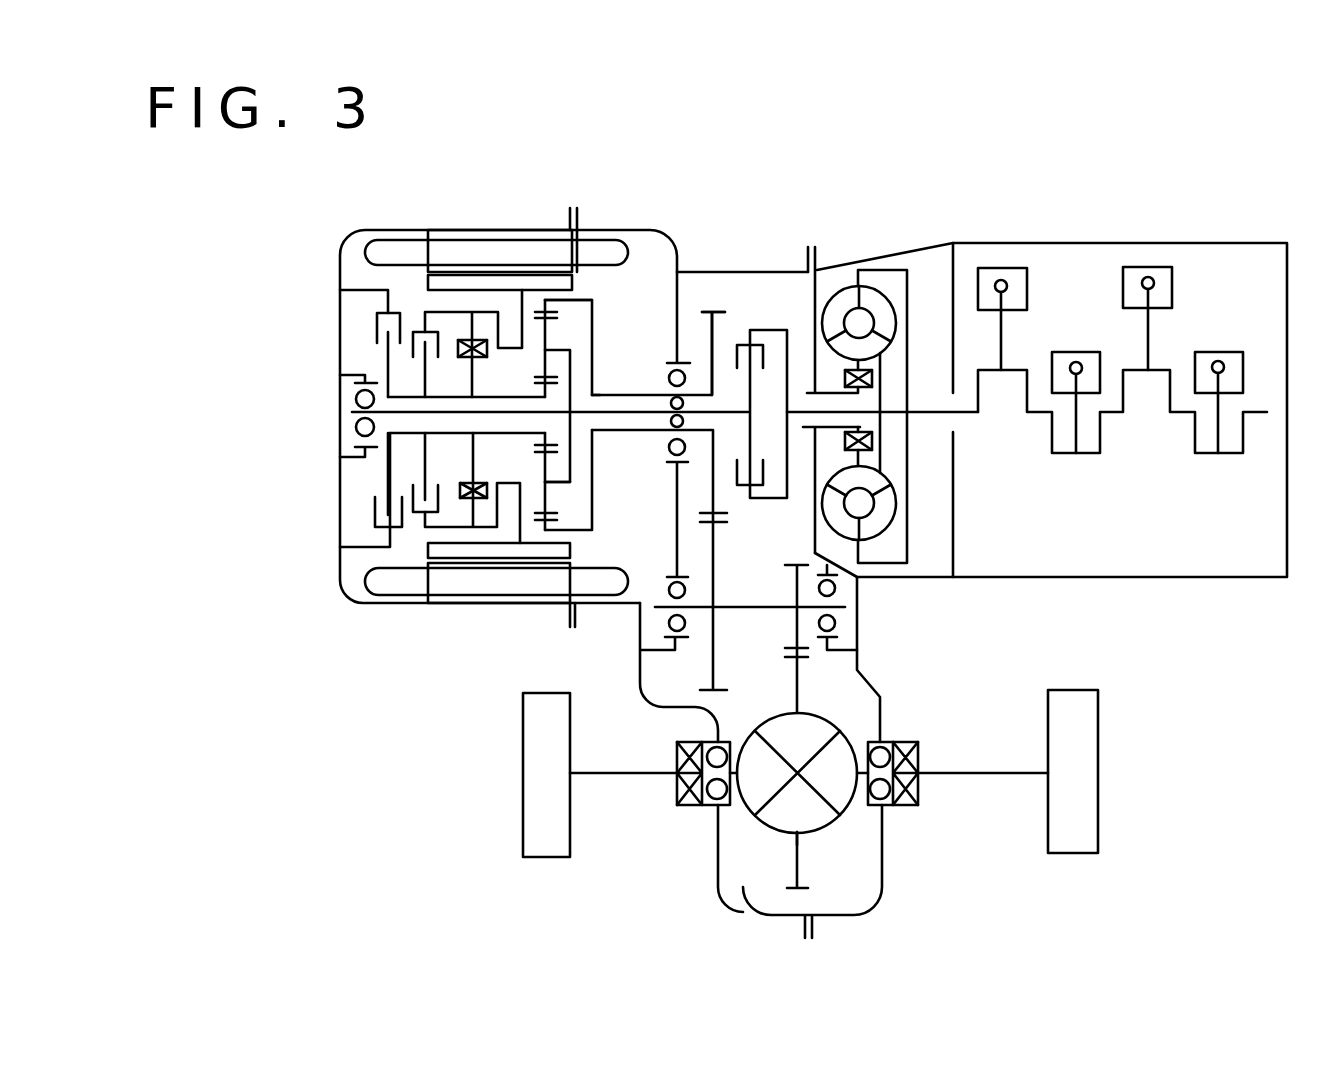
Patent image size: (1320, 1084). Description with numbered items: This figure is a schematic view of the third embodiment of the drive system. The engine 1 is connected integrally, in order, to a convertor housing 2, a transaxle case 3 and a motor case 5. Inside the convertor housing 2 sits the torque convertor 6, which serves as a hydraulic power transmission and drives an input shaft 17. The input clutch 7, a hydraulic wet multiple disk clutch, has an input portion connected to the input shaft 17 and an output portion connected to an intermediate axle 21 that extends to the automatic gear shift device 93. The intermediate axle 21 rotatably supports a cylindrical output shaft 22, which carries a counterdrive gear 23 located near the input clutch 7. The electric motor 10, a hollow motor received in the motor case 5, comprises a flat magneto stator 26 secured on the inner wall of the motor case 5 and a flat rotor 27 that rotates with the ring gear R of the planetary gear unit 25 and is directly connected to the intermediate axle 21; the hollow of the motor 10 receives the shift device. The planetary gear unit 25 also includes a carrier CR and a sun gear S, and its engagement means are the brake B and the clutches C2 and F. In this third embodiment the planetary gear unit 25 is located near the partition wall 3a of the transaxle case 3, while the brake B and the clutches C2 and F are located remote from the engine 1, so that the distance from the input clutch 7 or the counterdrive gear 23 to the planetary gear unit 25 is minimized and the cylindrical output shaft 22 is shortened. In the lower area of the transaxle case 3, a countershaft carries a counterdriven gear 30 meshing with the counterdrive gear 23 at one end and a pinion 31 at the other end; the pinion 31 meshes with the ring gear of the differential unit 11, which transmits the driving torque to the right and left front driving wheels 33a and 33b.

The engine 1 is at (1168, 236).
The convertor housing 2 is at (920, 247).
The transaxle case 3 is at (736, 272).
The partition wall 3a is at (659, 403).
The motor case 5 is at (363, 232).
The torque convertor 6 is at (841, 268).
The input clutch 7 is at (742, 345).
The automatic gear shift device 93 is at (592, 285).
The electric motor 10 is at (490, 222).
The differential unit 11 is at (855, 700).
The input shaft 17 is at (875, 424).
The intermediate axle 21 is at (613, 414).
The cylindrical output shaft 22 is at (650, 432).
The counterdrive gear 23 is at (708, 310).
The planetary gear unit 25 is at (578, 335).
The magneto stator 26 is at (447, 250).
The rotor 27 is at (548, 275).
The counterdriven gear 30 is at (714, 552).
The pinion 31 is at (797, 630).
The front driving wheel 33a is at (540, 822).
The front driving wheel 33b is at (1077, 827).
The brake B is at (375, 505).
The clutch C2 is at (413, 510).
The clutch F is at (458, 500).
The ring gear R is at (533, 521).
The carrier CR is at (562, 488).
The sun gear S is at (557, 438).